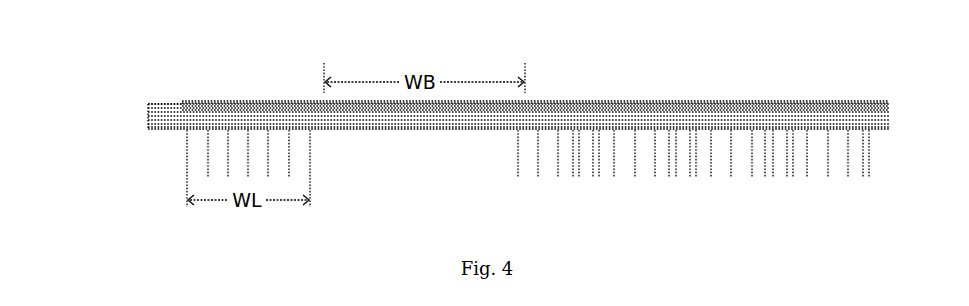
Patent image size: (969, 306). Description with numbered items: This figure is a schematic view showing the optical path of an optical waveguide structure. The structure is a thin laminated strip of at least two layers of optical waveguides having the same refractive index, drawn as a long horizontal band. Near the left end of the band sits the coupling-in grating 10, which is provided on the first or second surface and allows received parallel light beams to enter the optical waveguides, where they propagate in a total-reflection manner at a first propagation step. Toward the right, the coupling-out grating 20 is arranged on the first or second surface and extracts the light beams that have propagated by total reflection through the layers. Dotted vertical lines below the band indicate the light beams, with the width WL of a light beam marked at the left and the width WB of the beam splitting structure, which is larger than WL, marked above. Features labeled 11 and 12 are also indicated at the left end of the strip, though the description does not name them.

The coupling-in grating 10 is at (249, 96).
The first end of wire assembly 11 is at (155, 95).
The base layer 12 is at (160, 141).
The coupling-out grating 20 is at (744, 95).